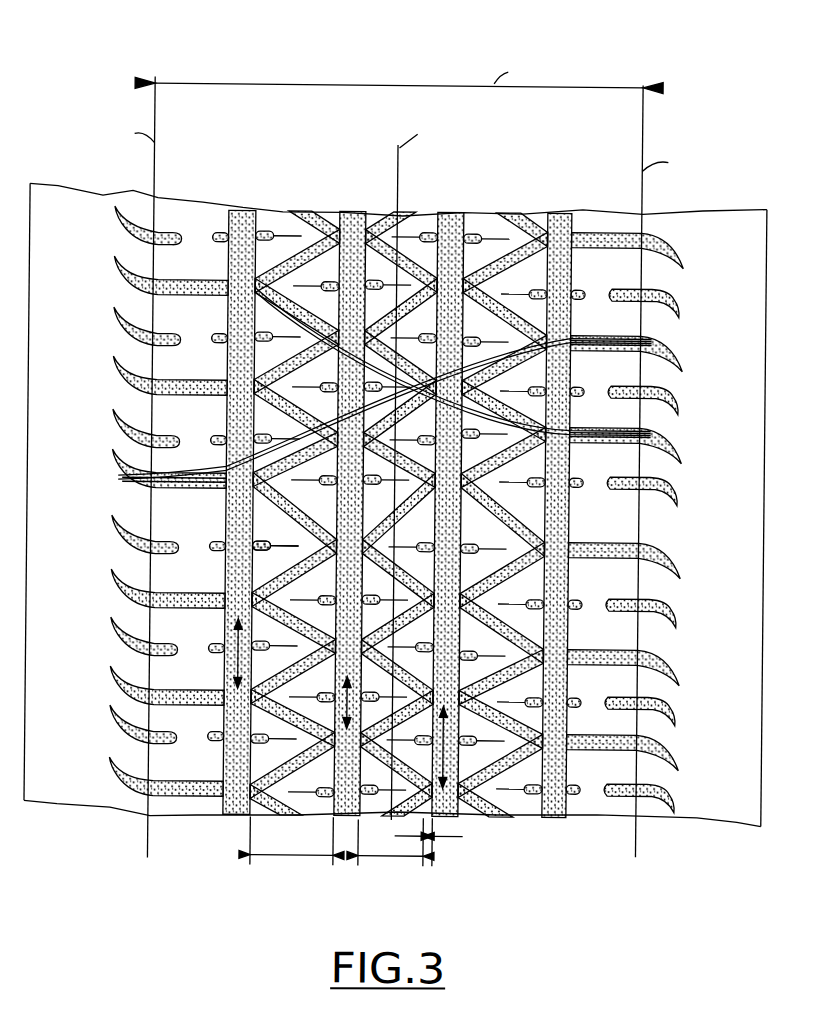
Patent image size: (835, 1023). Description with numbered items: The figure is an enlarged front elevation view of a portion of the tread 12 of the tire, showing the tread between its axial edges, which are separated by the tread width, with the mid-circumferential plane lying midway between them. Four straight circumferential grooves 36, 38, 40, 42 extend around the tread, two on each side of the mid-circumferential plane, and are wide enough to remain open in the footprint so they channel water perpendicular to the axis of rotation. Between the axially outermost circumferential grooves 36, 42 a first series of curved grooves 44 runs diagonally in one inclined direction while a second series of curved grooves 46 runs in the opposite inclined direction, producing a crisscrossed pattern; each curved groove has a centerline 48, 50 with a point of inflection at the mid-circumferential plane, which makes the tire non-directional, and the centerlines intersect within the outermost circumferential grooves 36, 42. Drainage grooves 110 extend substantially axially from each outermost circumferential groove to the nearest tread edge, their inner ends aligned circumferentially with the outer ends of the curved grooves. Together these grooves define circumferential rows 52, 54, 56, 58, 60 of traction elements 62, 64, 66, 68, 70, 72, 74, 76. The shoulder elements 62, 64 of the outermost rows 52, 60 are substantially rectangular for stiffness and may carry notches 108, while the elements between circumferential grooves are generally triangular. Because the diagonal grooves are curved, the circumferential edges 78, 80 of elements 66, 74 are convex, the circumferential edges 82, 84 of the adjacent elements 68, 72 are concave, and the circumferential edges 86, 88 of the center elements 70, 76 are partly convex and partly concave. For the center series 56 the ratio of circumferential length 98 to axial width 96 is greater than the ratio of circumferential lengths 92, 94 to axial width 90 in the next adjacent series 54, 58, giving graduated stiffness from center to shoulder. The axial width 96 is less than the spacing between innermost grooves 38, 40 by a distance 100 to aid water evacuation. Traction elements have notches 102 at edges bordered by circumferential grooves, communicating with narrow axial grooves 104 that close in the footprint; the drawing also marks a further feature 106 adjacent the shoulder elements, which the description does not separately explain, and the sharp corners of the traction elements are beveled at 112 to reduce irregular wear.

The tread 12 is at (616, 53).
The circumferential groove 36 is at (240, 211).
The circumferential groove 38 is at (349, 213).
The circumferential groove 40 is at (452, 213).
The circumferential groove 42 is at (553, 212).
The curved groove of the first series 44 is at (303, 326).
The curved groove of the second series 46 is at (269, 463).
The centerline 48 is at (286, 263).
The centerline 50 is at (348, 463).
The circumferential series of traction elements 52 is at (187, 200).
The circumferential series of traction elements 54 is at (296, 216).
The circumferential series of traction elements 56 is at (411, 212).
The circumferential series of traction elements 58 is at (499, 214).
The circumferential series of traction elements 60 is at (614, 214).
The traction element 62 is at (172, 536).
The traction element 64 is at (616, 522).
The traction element 66 is at (282, 539).
The traction element 68 is at (293, 602).
The traction element 70 is at (428, 543).
The traction element 72 is at (527, 613).
The traction element 74 is at (495, 613).
The traction element 76 is at (367, 593).
The circumferential edge 78 is at (294, 507).
The circumferential edge 80 is at (300, 569).
The circumferential edge 82 is at (510, 521).
The circumferential edge 84 is at (557, 566).
The circumferential edge 86 is at (396, 585).
The circumferential edge 88 is at (397, 624).
The axial width 90 is at (304, 859).
The circumferential length 92 is at (226, 674).
The circumferential length 94 is at (322, 673).
The axial width 96 is at (404, 858).
The circumferential length 98 is at (459, 783).
The distance 100 is at (459, 846).
The notch 102 is at (570, 611).
The narrow groove 104 is at (572, 638).
The lateral sipe 106 is at (580, 700).
The notch 108 is at (680, 703).
The drainage groove 110 is at (182, 472).
The beveled corner 112 is at (567, 720).